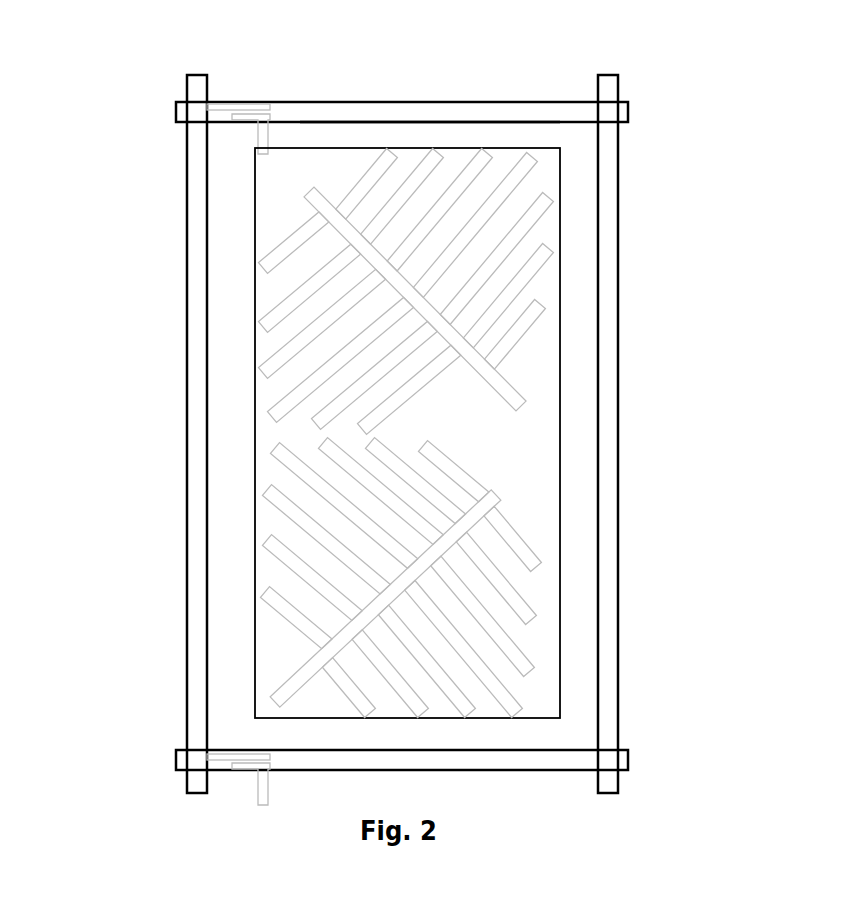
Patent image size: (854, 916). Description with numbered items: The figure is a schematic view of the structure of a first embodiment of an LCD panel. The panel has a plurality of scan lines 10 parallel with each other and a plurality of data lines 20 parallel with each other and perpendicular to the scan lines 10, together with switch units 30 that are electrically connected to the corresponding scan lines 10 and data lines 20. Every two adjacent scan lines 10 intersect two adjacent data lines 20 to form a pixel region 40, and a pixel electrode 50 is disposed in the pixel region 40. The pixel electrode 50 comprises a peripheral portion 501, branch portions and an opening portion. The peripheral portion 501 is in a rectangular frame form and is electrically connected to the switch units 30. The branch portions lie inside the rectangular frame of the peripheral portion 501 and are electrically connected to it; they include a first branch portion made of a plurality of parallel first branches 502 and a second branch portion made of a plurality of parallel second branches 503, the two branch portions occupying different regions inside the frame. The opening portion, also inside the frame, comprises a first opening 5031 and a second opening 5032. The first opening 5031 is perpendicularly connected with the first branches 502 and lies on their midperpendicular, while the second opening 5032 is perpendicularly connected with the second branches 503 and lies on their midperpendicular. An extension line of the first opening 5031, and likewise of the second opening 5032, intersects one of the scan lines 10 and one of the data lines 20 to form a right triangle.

The scan lines 10 is at (330, 112).
The data lines 20 is at (197, 96).
The switch units 30 is at (258, 121).
The pixel region 40 is at (423, 133).
The pixel electrode 50 is at (521, 148).
The peripheral portion 501 is at (551, 228).
The first branches 502 is at (512, 342).
The second branches 503 is at (270, 548).
The first opening 5031 is at (518, 400).
The second opening 5032 is at (497, 497).